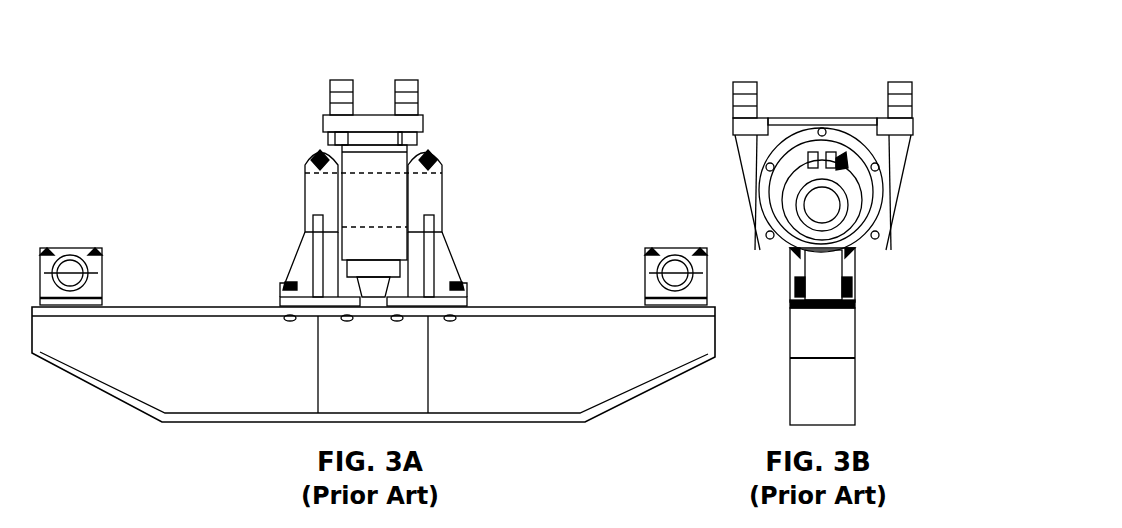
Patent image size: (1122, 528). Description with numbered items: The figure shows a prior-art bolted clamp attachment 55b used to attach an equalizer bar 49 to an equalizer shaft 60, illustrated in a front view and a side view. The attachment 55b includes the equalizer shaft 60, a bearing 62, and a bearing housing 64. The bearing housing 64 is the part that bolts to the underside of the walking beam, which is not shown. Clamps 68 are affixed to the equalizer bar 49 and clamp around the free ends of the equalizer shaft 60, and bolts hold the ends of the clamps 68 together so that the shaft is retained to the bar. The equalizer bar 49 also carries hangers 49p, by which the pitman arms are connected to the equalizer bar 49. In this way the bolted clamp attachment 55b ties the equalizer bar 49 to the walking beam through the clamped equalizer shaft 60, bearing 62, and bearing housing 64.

In FIG. 3A, the bolted clamp attachment 55b is at (171, 78).
In FIG. 3B, the bolted clamp attachment 55b is at (632, 108).
In FIG. 3A, the equalizer bar 49 is at (180, 307).
In FIG. 3B, the equalizer bar 49 is at (855, 378).
In FIG. 3A, the hangers 49p is at (70, 245).
In FIG. 3A, the bearing housing 64 is at (323, 124).
In FIG. 3B, the bearing housing 64 is at (735, 126).
In FIG. 3A, the equalizer shaft 60 is at (355, 186).
In FIG. 3B, the equalizer shaft 60 is at (840, 203).
In FIG. 3A, the bearing 62 is at (385, 156).
In FIG. 3A, the clamps 68 is at (303, 250).
In FIG. 3B, the clamps 68 is at (847, 231).